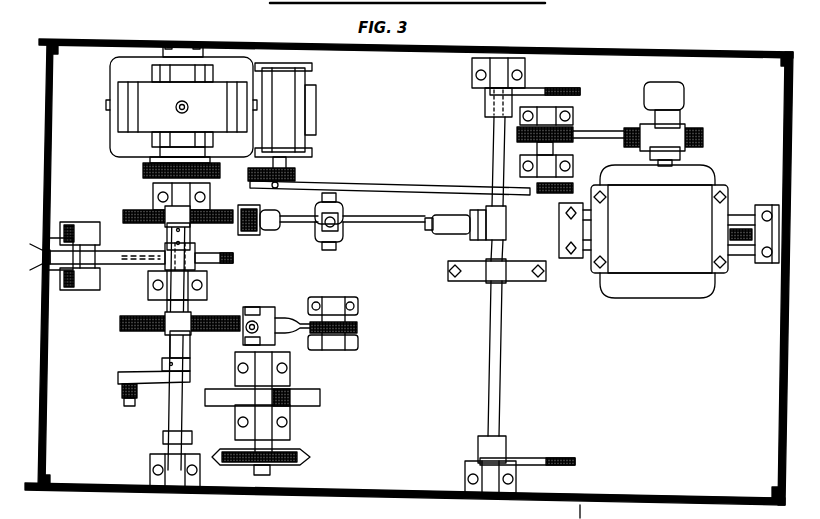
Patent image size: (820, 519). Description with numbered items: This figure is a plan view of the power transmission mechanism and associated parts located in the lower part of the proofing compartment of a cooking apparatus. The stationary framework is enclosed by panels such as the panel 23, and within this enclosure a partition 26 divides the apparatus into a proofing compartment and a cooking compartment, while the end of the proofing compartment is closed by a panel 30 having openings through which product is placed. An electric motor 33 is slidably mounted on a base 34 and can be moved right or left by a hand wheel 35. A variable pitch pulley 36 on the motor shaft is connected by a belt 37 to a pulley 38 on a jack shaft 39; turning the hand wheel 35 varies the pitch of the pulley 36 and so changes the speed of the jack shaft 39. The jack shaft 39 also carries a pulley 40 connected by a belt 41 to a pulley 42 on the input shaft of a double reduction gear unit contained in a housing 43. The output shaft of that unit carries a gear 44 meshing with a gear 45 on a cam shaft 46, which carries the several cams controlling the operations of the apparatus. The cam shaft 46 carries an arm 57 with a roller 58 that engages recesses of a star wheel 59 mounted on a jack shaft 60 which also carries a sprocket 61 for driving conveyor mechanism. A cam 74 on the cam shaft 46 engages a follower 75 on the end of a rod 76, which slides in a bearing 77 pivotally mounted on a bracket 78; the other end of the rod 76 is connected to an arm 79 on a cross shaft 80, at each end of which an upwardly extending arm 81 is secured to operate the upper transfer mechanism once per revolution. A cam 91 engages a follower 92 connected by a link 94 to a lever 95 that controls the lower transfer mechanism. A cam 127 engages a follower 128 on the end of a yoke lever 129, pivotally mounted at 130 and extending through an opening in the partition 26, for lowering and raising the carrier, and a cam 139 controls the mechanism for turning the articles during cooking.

The panel 23 is at (572, 50).
The partition 26 is at (48, 376).
The panel 30 is at (777, 346).
The electric motor 33 is at (659, 231).
The base 34 is at (576, 260).
The hand wheel 35 is at (772, 266).
The variable pitch pulley 36 is at (692, 128).
The belt 37 is at (585, 133).
The pulley 38 is at (576, 146).
The jack shaft 39 is at (548, 200).
The pulley 40 is at (578, 184).
The belt 41 is at (387, 181).
The pulley 42 is at (312, 179).
The housing 43 is at (181, 100).
The gear 44 is at (150, 185).
The gear 45 is at (143, 170).
The cam shaft 46 is at (184, 352).
The arm 57 is at (150, 363).
The roller 58 is at (122, 396).
The star wheel 59 is at (320, 398).
The jack shaft 60 is at (265, 473).
The sprocket 61 is at (312, 459).
The cam 74 is at (218, 215).
The follower 75 is at (265, 236).
The rod 76 is at (372, 225).
The bearing 77 is at (345, 213).
The bracket 78 is at (340, 244).
The arm 79 is at (470, 239).
The cross shaft 80 is at (500, 360).
The upwardly extending arm 81 is at (555, 91).
The cam 91 is at (120, 325).
The follower 92 is at (270, 308).
The link 94 is at (302, 320).
The lever 95 is at (360, 327).
The cam 127 is at (215, 265).
The follower 128 is at (203, 253).
The yoke lever 129 is at (105, 250).
The pivot 130 is at (82, 286).
The cam 139 is at (163, 440).